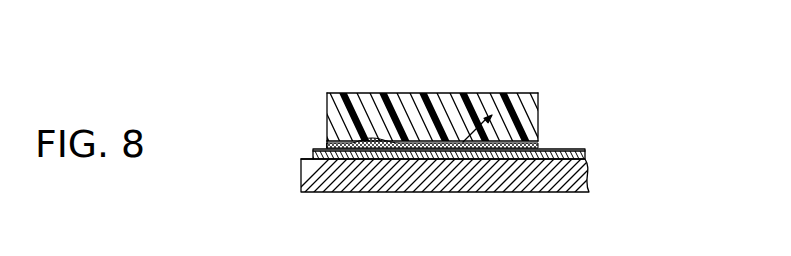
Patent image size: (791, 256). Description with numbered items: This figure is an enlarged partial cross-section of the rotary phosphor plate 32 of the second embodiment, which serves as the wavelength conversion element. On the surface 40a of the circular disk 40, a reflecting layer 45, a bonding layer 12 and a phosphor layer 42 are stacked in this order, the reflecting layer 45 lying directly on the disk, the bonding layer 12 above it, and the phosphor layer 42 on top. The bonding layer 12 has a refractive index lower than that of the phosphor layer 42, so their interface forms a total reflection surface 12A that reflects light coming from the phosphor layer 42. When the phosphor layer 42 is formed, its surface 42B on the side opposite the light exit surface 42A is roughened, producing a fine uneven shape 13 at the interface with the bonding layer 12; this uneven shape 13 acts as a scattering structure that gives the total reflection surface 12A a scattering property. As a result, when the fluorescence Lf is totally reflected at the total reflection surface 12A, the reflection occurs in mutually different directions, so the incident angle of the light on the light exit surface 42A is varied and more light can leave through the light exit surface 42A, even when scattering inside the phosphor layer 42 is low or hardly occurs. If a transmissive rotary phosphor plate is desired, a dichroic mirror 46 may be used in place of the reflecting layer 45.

The rotary phosphor plate 32 is at (565, 54).
The phosphor layer 42 is at (538, 100).
The light exit surface 42A is at (340, 92).
The surface 42B is at (492, 148).
The bonding layer 12 is at (538, 145).
The total reflection surface 12A is at (325, 141).
The uneven shape 13 is at (363, 140).
The fluorescence Lf is at (462, 141).
The reflecting layer 45 is at (585, 150).
The dichroic mirror 46 is at (447, 154).
The circular disk 40 is at (353, 168).
The surface 40a is at (313, 150).